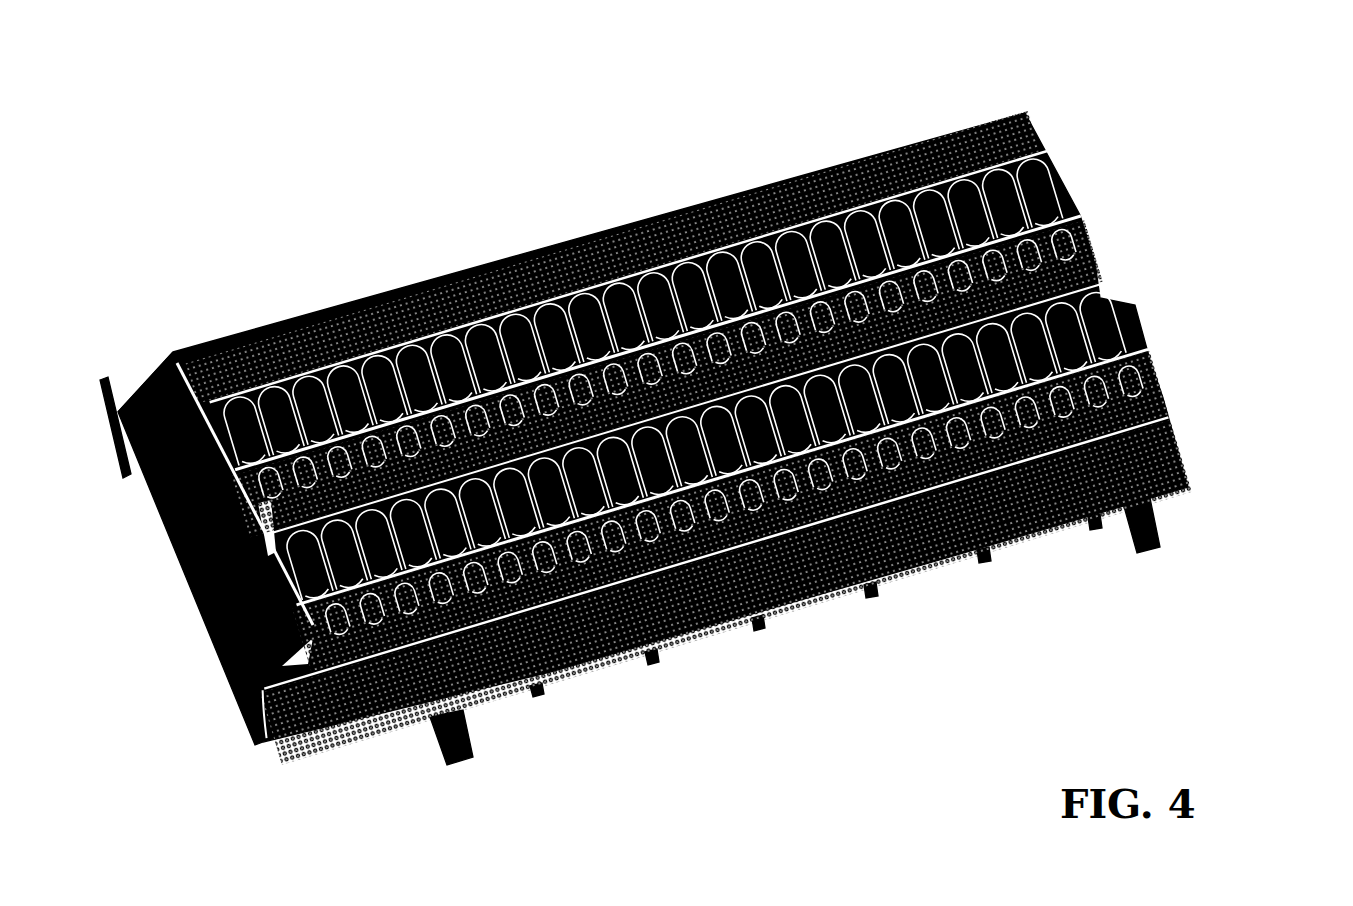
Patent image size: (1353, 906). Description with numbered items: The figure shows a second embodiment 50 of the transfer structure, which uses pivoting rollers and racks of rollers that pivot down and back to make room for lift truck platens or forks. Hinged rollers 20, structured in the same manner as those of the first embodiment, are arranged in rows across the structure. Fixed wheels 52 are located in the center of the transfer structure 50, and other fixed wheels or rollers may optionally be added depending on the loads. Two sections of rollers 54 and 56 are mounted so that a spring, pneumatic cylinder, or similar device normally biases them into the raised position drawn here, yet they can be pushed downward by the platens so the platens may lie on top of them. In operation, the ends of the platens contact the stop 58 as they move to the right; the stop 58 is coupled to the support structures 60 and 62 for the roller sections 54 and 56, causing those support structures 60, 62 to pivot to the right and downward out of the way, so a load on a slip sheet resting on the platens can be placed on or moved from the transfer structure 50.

The second embodiment of the transfer structure 50 is at (717, 166).
The hinged rollers 20 is at (665, 222).
The stop 58 is at (153, 367).
The section of rollers 56 is at (1053, 162).
The support structure 62 is at (1080, 217).
The fixed wheels 52 is at (1087, 243).
The section of rollers 54 is at (1133, 317).
The support structure 60 is at (1150, 363).